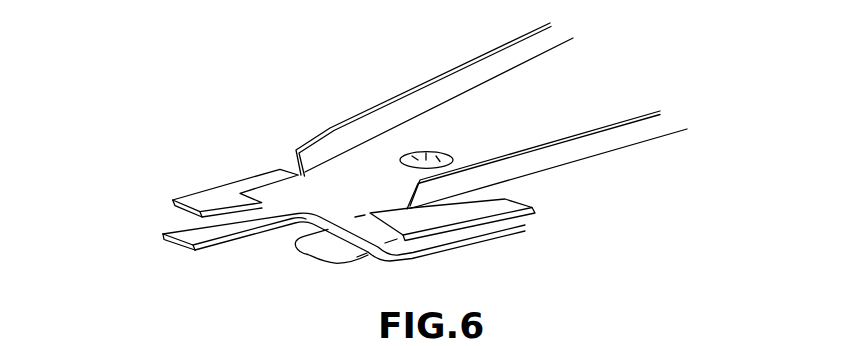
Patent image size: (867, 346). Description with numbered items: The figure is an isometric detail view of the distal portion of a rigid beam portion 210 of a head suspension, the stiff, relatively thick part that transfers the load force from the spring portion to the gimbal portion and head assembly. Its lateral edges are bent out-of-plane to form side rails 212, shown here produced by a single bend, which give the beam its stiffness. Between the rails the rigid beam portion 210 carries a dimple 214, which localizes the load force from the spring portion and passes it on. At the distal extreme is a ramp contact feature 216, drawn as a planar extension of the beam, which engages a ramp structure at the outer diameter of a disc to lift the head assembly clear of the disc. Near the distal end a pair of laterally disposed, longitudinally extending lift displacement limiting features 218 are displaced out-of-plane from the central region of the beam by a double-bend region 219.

The rigid beam portion 210 is at (230, 80).
The side rails 212 is at (440, 90).
The dimple 214 is at (452, 153).
The ramp contact feature 216 is at (196, 234).
The lift displacement limiting features 218 is at (234, 188).
The double-bend region 219 is at (308, 253).